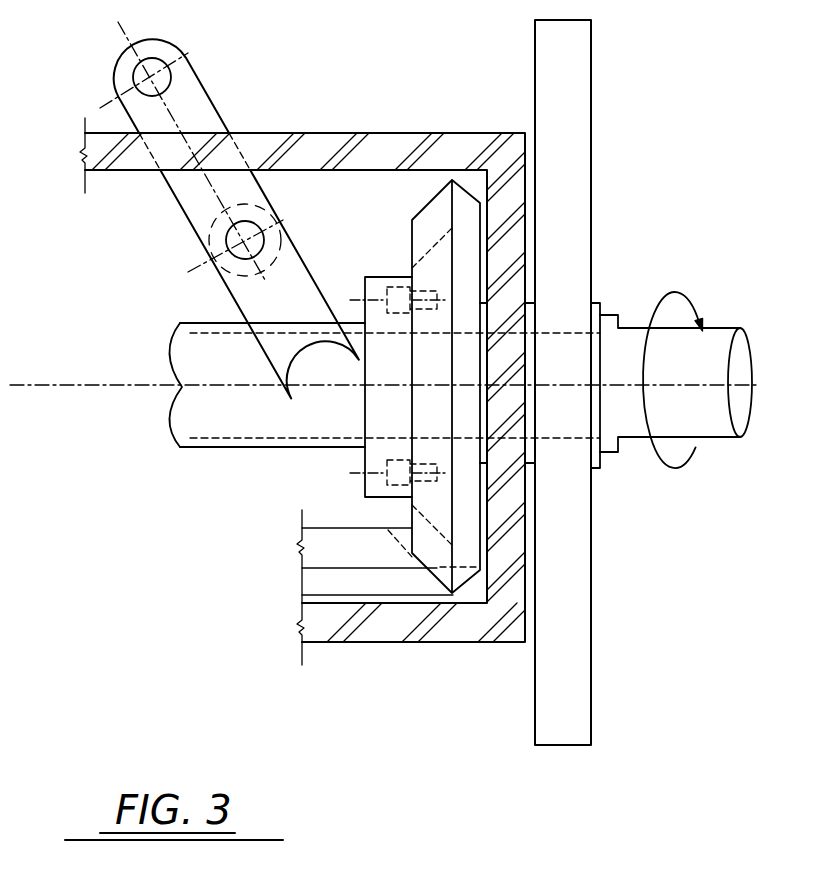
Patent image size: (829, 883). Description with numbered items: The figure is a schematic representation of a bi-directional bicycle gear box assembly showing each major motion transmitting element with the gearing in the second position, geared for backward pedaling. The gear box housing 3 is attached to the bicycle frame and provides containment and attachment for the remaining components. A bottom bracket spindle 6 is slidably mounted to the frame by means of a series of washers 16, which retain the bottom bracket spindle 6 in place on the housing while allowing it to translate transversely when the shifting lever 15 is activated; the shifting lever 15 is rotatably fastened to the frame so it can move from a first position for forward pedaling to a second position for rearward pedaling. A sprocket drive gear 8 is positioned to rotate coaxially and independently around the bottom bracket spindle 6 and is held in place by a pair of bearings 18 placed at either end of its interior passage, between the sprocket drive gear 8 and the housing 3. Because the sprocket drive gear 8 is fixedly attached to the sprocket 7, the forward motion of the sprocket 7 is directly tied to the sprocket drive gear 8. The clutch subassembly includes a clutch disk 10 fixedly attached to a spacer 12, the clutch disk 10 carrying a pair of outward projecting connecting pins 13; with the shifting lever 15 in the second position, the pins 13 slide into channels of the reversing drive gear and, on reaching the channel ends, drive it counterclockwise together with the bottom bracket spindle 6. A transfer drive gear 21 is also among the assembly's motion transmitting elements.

The gear box housing 3 is at (313, 129).
The bottom bracket spindle 6 is at (635, 440).
The sprocket 7 is at (591, 98).
The sprocket drive gear 8 is at (415, 205).
The clutch disk 10 is at (383, 271).
The spacer 12 is at (213, 452).
The connecting pins 13 is at (383, 467).
The shifting lever 15 is at (205, 87).
The washers 16 is at (599, 301).
The bearings 18 is at (500, 462).
The transfer drive gear 21 is at (327, 604).